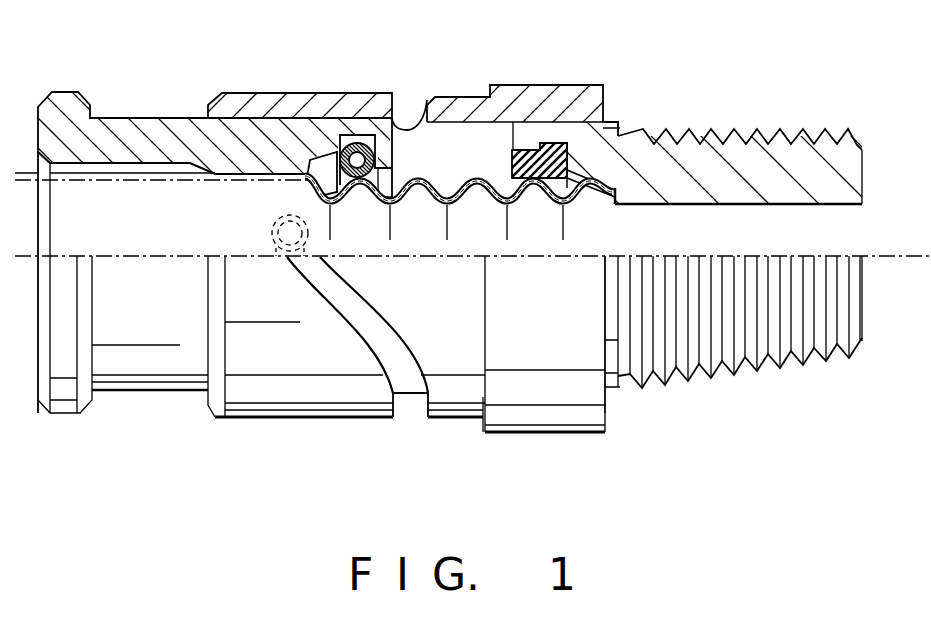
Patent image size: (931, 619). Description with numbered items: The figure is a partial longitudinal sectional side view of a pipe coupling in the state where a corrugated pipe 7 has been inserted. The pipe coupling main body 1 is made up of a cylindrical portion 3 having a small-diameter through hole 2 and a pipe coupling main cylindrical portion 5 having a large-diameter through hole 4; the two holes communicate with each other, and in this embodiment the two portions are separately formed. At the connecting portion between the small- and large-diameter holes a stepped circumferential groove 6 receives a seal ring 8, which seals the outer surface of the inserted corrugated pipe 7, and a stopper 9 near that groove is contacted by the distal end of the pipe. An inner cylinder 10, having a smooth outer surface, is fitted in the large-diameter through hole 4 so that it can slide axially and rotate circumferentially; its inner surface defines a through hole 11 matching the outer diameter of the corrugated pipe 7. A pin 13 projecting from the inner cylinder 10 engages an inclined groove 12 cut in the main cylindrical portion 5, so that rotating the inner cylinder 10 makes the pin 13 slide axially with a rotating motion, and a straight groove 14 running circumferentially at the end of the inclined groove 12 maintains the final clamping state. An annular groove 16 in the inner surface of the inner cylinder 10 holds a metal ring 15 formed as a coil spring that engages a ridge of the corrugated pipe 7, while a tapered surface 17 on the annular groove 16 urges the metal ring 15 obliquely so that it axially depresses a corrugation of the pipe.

The pipe coupling main body 1 is at (548, 85).
The small-diameter through hole 2 is at (735, 207).
The cylindrical portion 3 is at (800, 170).
The large-diameter through hole 4 is at (462, 150).
The pipe coupling main cylindrical portion 5 is at (292, 108).
The stepped circumferential groove 6 is at (603, 123).
The corrugated pipe 7 is at (430, 205).
The seal ring 8 is at (552, 147).
The stopper 9 is at (620, 132).
The inner cylinder 10 is at (160, 125).
The through hole 11 is at (250, 197).
The inclined groove 12 is at (358, 318).
The pin 13 is at (288, 268).
The straight groove 14 is at (410, 103).
The metal ring 15 is at (387, 163).
The annular groove 16 is at (352, 157).
The tapered surface 17 is at (320, 163).